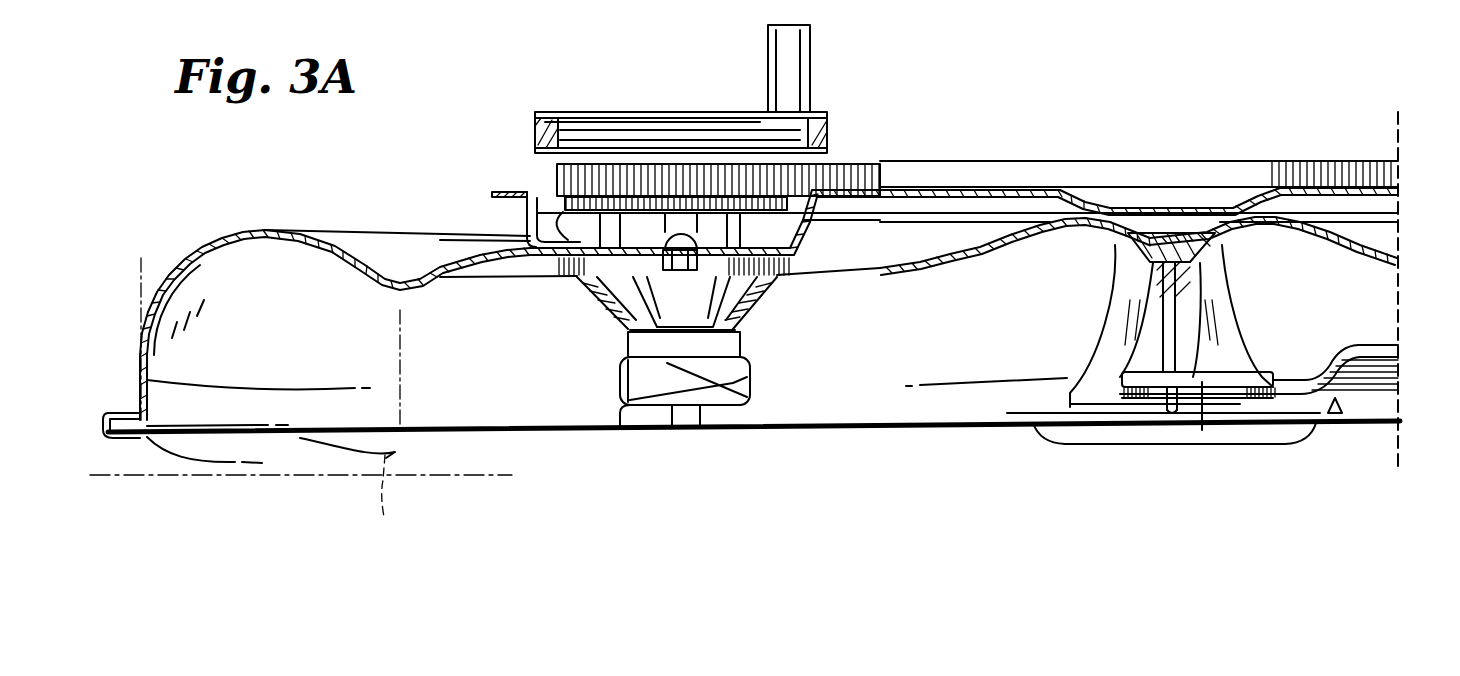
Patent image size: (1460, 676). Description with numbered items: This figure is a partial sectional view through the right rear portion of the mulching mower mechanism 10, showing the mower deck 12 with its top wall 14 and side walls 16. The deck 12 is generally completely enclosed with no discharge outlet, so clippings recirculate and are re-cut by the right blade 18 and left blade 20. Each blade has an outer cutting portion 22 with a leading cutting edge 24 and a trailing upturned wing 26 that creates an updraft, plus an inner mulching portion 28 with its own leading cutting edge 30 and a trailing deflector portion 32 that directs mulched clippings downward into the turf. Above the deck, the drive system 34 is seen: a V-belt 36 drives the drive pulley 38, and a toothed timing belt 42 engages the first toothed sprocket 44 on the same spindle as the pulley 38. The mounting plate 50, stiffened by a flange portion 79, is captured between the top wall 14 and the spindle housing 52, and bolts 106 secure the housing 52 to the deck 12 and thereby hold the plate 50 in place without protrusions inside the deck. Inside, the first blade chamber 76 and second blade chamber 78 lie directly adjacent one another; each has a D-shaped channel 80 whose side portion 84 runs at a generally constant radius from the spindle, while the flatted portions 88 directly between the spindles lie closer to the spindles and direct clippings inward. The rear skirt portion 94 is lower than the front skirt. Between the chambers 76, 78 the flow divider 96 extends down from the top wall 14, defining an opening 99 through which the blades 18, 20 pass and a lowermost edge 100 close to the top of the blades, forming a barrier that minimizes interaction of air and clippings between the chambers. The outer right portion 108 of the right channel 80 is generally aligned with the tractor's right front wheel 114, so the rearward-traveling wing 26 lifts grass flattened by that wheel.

The mulching mower mechanism 10 is at (985, 38).
The mower deck 12 is at (300, 438).
The top wall 14 is at (443, 262).
The side walls 16 is at (140, 343).
The first or right blade 18 is at (670, 428).
The second or left blade 20 is at (1326, 430).
The outer cutting portion 22 is at (700, 428).
The leading cutting edge 24 is at (612, 408).
The trailing upturned wing 26 is at (745, 399).
The inner mulching portion 28 is at (1373, 402).
The leading cutting edge of mulching portion 30 is at (1401, 340).
The trailing deflector portion 32 is at (1372, 352).
The drive system 34 is at (546, 88).
The V-belt 36 is at (827, 127).
The drive pulley 38 is at (703, 120).
The toothed timing belt 42 is at (918, 160).
The first toothed sprocket 44 is at (560, 210).
The mounting plate 50 is at (527, 224).
The spindle housing 52 is at (627, 300).
The first blade chamber 76 is at (470, 359).
The second blade chamber 78 is at (1360, 286).
The flange portion 79 is at (538, 185).
The channel 80 is at (270, 314).
The side portion of channel 84 is at (312, 369).
The flatted portion of channel 88 is at (1073, 334).
The rear skirt portion 94 is at (505, 437).
The flow divider 96 is at (1115, 262).
The opening 99 is at (1133, 330).
The lowermost edge 100 is at (1185, 312).
The bolts 106 is at (670, 232).
The outer right portion of channel 108 is at (215, 460).
The right front wheel 114 is at (396, 490).